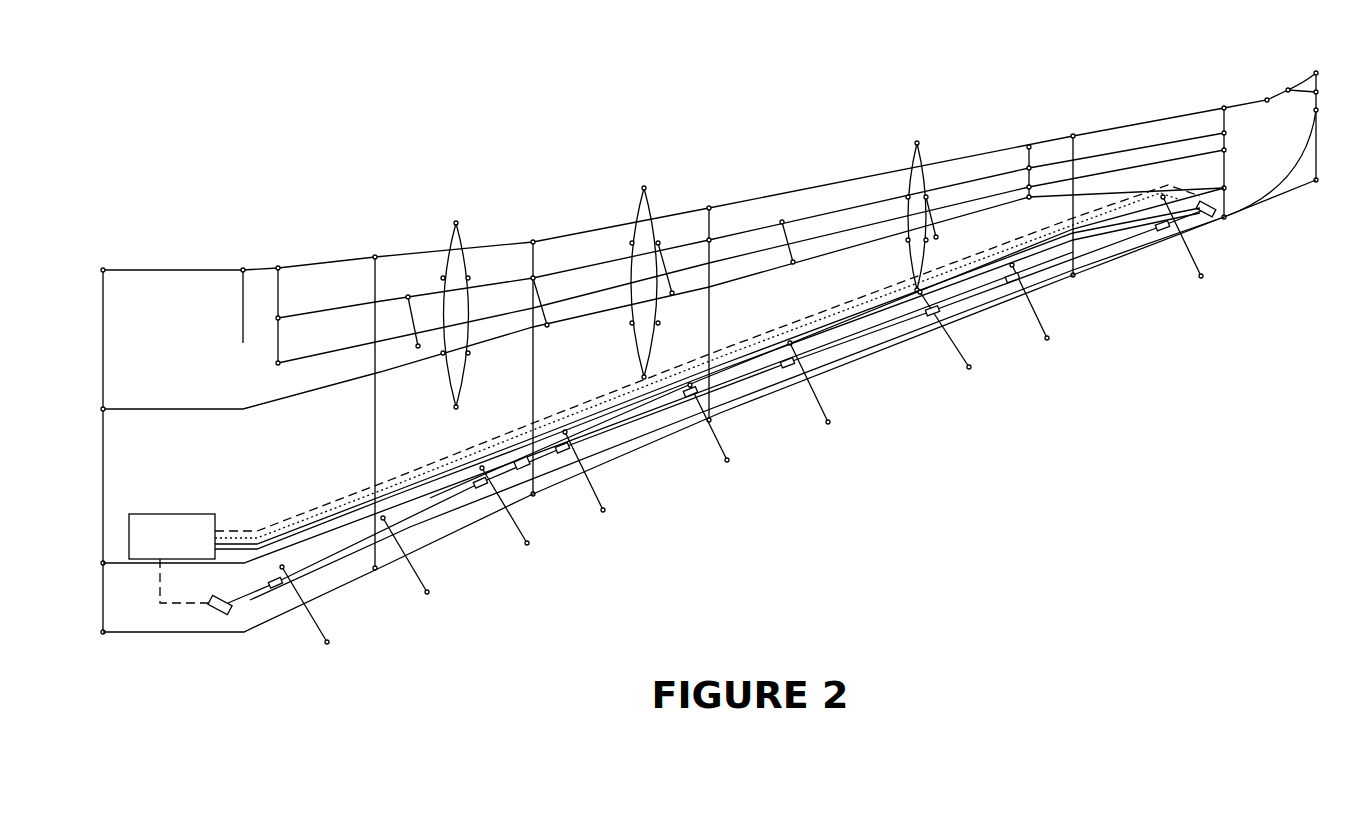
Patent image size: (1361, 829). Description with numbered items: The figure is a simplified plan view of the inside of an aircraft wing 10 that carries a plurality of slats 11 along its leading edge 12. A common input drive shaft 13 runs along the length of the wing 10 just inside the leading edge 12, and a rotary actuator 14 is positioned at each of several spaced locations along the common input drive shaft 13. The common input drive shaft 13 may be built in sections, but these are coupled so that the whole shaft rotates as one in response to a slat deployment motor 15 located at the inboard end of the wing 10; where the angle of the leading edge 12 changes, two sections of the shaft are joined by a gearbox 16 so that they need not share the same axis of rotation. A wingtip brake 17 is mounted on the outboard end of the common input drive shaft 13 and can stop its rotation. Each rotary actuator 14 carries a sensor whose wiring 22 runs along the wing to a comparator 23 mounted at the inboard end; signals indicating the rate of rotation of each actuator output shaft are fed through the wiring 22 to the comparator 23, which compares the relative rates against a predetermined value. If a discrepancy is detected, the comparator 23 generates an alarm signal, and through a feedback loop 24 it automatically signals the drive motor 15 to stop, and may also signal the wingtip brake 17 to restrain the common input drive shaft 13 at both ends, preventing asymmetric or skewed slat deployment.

The aircraft wing 10 is at (482, 110).
The slats 11 is at (352, 568).
The leading edge 12 is at (613, 483).
The common input drive shaft 13 is at (873, 334).
The rotary actuator 14 is at (283, 590).
The slat deployment motor 15 is at (220, 614).
The gearbox 16 is at (525, 470).
The wingtip brake 17 is at (1213, 218).
The wiring 22 is at (330, 517).
The comparator 23 is at (143, 538).
The feedback loop 24 is at (157, 575).